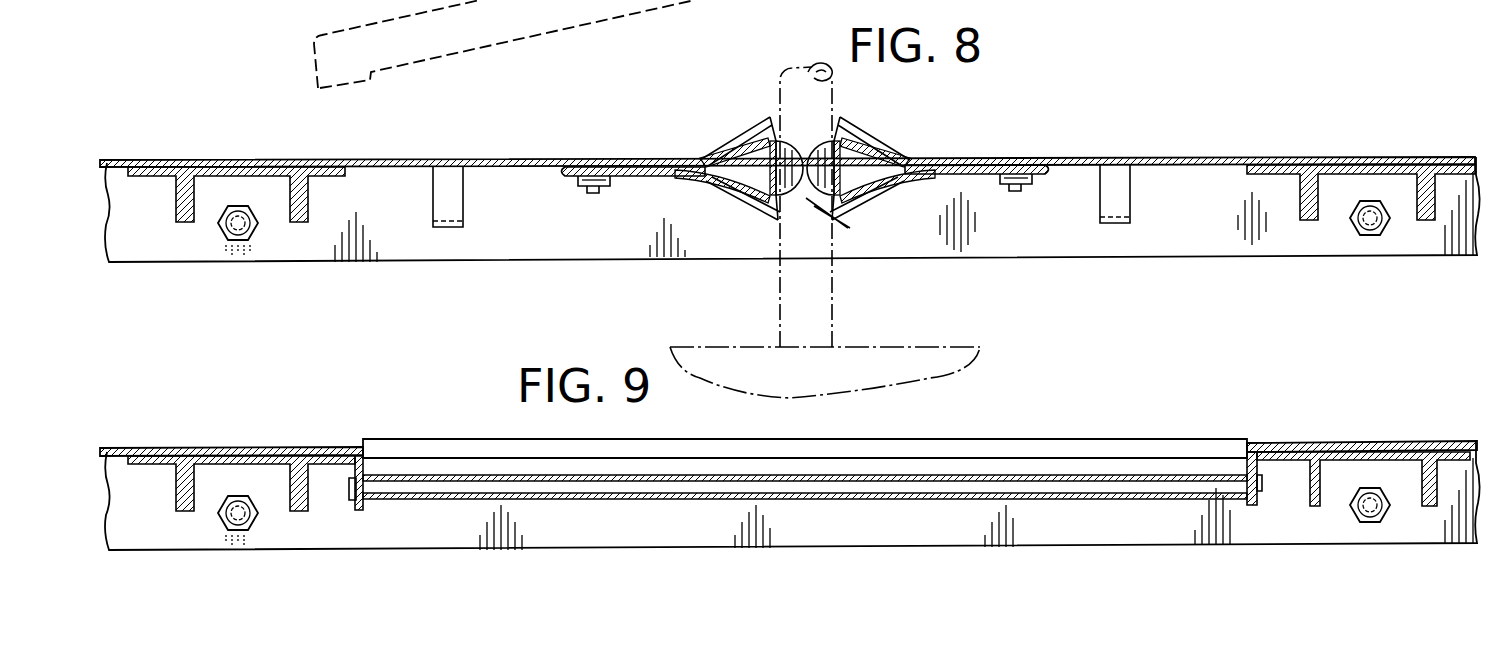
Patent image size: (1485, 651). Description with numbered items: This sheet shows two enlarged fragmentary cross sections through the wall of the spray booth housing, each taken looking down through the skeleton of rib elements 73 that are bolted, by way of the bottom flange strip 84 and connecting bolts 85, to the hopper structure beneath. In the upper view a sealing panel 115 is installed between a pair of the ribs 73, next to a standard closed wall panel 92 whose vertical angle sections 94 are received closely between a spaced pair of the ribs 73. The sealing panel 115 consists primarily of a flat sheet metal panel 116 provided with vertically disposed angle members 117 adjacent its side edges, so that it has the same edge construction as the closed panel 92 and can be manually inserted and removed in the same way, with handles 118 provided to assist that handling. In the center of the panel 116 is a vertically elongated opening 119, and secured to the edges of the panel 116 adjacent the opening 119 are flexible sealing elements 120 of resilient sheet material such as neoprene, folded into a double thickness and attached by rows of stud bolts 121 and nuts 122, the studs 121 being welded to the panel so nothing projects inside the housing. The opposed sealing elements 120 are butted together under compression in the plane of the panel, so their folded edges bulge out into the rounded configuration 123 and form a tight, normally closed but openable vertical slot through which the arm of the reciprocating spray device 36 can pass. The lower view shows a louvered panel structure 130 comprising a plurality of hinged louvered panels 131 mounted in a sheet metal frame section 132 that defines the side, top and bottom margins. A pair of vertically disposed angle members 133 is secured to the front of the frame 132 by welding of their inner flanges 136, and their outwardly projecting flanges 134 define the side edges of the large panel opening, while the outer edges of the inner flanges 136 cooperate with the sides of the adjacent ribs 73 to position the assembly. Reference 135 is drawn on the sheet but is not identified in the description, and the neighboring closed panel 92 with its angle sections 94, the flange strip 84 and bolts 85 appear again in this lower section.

In FIG. 8, the reciprocating spray device 36 is at (834, 312).
In FIG. 9, the rib element 73 is at (270, 472).
In FIG. 8, the flange strip 84 is at (166, 245).
In FIG. 9, the flange strip 84 is at (170, 535).
In FIG. 8, the connecting bolt 85 is at (242, 245).
In FIG. 9, the connecting bolt 85 is at (242, 532).
In FIG. 8, the closed wall panel 92 is at (153, 150).
In FIG. 9, the closed wall panel 92 is at (150, 445).
In FIG. 8, the angle section 94 is at (155, 178).
In FIG. 9, the angle section 94 is at (155, 466).
In FIG. 8, the sealing panel 115 is at (537, 157).
In FIG. 8, the flat sheet metal panel 116 is at (418, 157).
In FIG. 8, the angle member 117 is at (310, 196).
In FIG. 8, the handle 118 is at (455, 207).
In FIG. 8, the vertically elongated opening 119 is at (973, 157).
In FIG. 8, the flexible sealing element 120 is at (745, 145).
In FIG. 8, the stud bolt 121 is at (594, 195).
In FIG. 8, the nut 122 is at (612, 182).
In FIG. 8, the bulged rounded configuration 123 is at (853, 221).
In FIG. 9, the louvered panel structure 130 is at (1030, 436).
In FIG. 9, the hinged louvered panel 131 is at (886, 438).
In FIG. 9, the sheet metal frame section 132 is at (1255, 442).
In FIG. 9, the angle member 133 is at (348, 488).
In FIG. 9, the outwardly projecting flange 134 is at (366, 506).
In FIG. 9, the clip 135 is at (1232, 458).
In FIG. 9, the inner flange 136 is at (1290, 450).